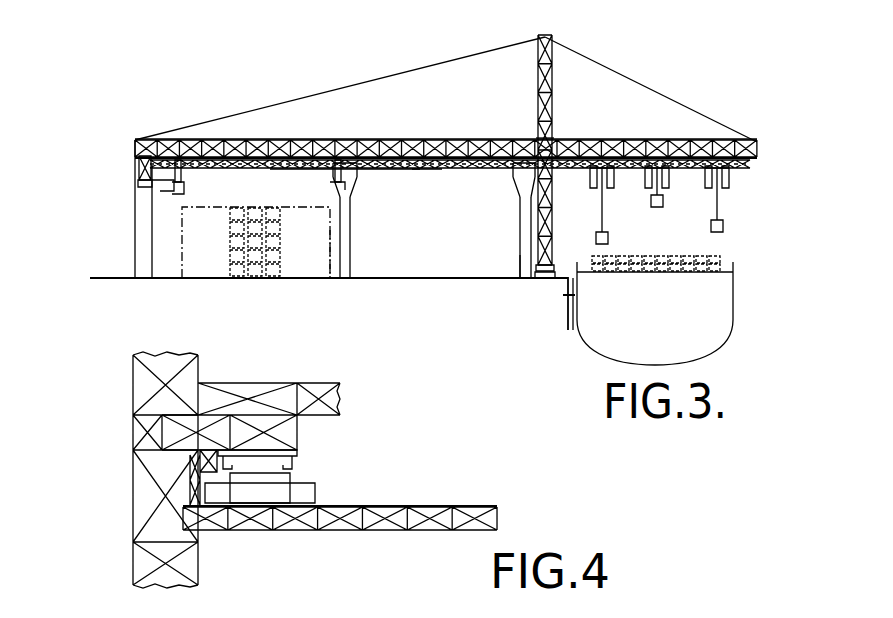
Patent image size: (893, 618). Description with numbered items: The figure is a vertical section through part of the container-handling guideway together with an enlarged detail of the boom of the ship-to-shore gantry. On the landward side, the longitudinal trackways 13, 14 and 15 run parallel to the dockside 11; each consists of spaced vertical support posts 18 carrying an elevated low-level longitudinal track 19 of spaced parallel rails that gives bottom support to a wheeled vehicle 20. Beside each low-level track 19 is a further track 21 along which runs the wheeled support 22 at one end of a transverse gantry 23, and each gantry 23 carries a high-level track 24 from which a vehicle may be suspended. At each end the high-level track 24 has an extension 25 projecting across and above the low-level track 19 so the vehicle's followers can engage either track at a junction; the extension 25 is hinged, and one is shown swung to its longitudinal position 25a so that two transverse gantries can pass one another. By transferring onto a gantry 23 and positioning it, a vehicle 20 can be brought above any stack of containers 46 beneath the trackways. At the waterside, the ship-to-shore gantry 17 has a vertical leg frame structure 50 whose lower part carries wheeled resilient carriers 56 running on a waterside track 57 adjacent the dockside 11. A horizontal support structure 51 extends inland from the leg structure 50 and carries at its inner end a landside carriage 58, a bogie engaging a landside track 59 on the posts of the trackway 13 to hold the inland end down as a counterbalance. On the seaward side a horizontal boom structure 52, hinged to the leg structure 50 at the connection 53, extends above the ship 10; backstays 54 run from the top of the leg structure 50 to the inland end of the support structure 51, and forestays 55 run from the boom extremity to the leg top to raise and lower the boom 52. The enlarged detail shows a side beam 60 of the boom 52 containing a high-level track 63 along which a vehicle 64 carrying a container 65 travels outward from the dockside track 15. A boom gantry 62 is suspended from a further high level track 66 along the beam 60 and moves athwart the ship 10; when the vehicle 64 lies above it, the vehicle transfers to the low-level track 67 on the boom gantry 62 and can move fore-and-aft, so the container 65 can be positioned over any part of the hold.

In FIG. 3, the ship 10 is at (733, 330).
In FIG. 3, the dockside 11 is at (569, 280).
In FIG. 3, the longitudinal trackway 13 is at (145, 211).
In FIG. 3, the longitudinal trackway 14 is at (343, 257).
In FIG. 3, the longitudinal trackway 15 is at (522, 256).
In FIG. 3, the ship-to-shore gantry 17 is at (632, 137).
In FIG. 3, the vertical support post 18 is at (145, 253).
In FIG. 3, the low-level longitudinal track 19 is at (176, 183).
In FIG. 3, the wheeled vehicle 20 is at (278, 140).
In FIG. 3, the further track 21 is at (178, 184).
In FIG. 3, the wheeled support 22 is at (181, 177).
In FIG. 3, the transverse gantry 23 is at (287, 172).
In FIG. 3, the high-level track 24 is at (198, 158).
In FIG. 3, the extension 25 is at (362, 140).
In FIG. 3, the extension in longitudinal position 25a is at (360, 139).
In FIG. 3, the stack of containers 46 is at (212, 265).
In FIG. 3, the leg frame structure 50 is at (548, 84).
In FIG. 4, the leg frame structure 50 is at (143, 383).
In FIG. 3, the horizontal support structure 51 is at (472, 138).
In FIG. 3, the horizontal boom structure 52 is at (695, 137).
In FIG. 3, the hinged connection 53 is at (552, 138).
In FIG. 3, the support backstay 54 is at (300, 97).
In FIG. 3, the forestay 55 is at (623, 73).
In FIG. 3, the wheeled resilient carrier 56 is at (550, 266).
In FIG. 3, the waterside track 57 is at (543, 278).
In FIG. 3, the landside carriage 58 is at (140, 162).
In FIG. 3, the landside track 59 is at (137, 177).
In FIG. 4, the side beam 60 is at (283, 435).
In FIG. 4, the boom gantry 62 is at (420, 513).
In FIG. 4, the high-level track 63 is at (293, 455).
In FIG. 4, the vehicle 64 is at (278, 495).
In FIG. 4, the container 65 is at (307, 498).
In FIG. 4, the further high level track 66 is at (167, 460).
In FIG. 4, the low-level track 67 is at (379, 507).